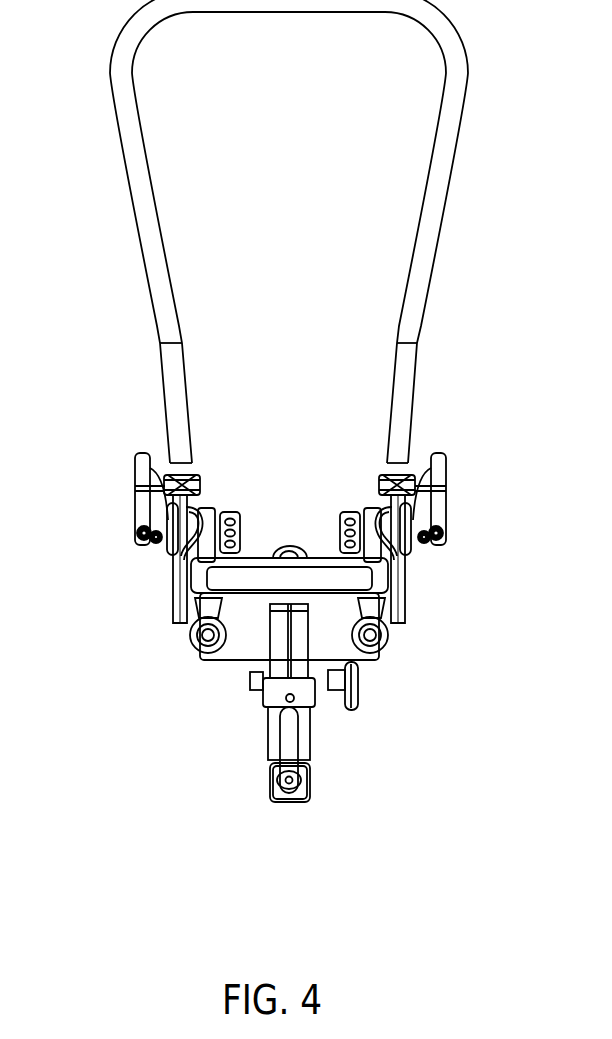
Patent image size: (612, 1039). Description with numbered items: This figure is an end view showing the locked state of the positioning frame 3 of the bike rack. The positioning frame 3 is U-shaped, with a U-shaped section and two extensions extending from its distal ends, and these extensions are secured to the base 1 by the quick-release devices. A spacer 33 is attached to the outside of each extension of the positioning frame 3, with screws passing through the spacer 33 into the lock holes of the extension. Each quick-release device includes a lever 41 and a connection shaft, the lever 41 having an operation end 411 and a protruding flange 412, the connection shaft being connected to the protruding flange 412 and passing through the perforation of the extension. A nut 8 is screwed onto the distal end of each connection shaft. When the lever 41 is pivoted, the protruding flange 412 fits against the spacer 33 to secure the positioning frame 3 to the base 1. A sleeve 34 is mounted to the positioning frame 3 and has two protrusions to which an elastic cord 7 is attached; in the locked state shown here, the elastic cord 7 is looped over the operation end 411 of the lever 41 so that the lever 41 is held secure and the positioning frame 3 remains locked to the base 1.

The base 1 is at (254, 667).
The positioning frame 3 is at (113, 55).
The elastic cord 7 is at (120, 480).
The nut 8 is at (236, 510).
The spacer 33 is at (167, 556).
The sleeve 34 is at (196, 474).
The lever 41 is at (145, 515).
The operation end 411 is at (446, 478).
The protruding flange 412 is at (418, 550).